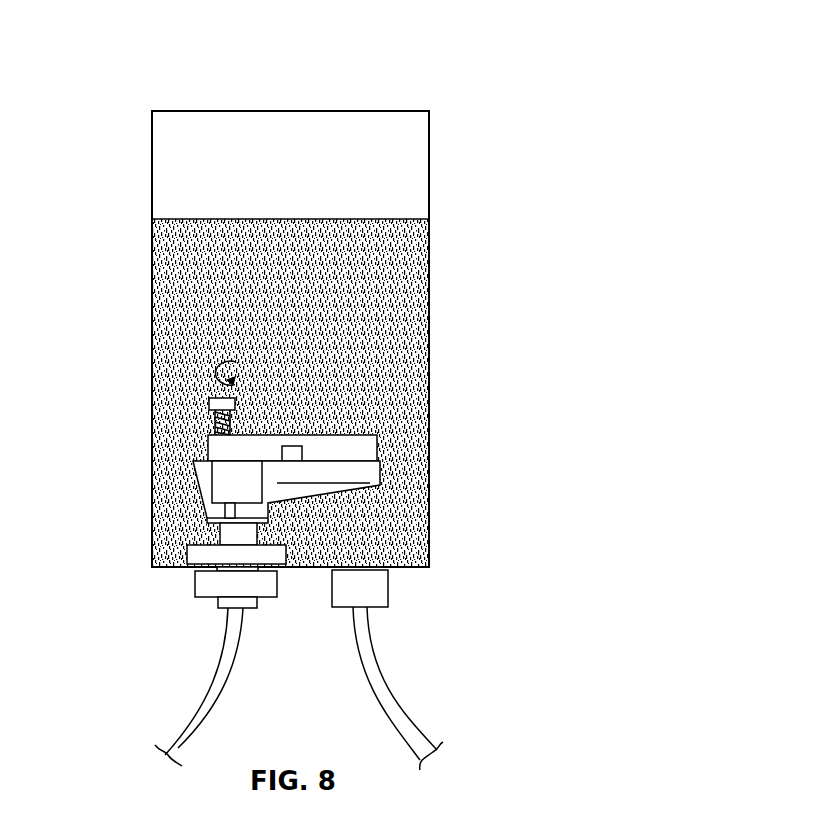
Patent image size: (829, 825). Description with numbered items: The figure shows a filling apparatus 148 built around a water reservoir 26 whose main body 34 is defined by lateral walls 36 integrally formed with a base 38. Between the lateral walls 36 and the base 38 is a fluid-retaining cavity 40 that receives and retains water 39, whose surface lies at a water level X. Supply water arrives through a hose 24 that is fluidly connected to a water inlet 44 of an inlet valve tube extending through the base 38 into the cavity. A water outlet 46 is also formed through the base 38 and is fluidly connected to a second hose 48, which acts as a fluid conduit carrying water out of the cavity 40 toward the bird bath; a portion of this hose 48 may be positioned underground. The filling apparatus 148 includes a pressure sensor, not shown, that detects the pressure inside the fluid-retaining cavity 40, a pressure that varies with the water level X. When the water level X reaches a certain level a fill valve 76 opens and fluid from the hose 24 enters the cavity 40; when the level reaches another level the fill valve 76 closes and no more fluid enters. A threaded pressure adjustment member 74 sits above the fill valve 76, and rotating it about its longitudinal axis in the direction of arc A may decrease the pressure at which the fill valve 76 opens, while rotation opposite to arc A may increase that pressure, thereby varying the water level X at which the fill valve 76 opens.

The filling apparatus 148 is at (125, 102).
The main body 34 is at (429, 111).
The fluid-retaining cavity 40 is at (408, 160).
The water reservoir 26 is at (429, 197).
The water 39 is at (397, 325).
The lateral walls 36 is at (428, 407).
The threaded pressure adjustment member 74 is at (210, 398).
The fill valve 76 is at (222, 482).
The water inlet 44 is at (233, 563).
The base 38 is at (167, 567).
The water outlet 46 is at (367, 570).
The hose 48 is at (415, 730).
The hose 24 is at (173, 735).
The arc A is at (236, 362).
The water level X is at (133, 223).